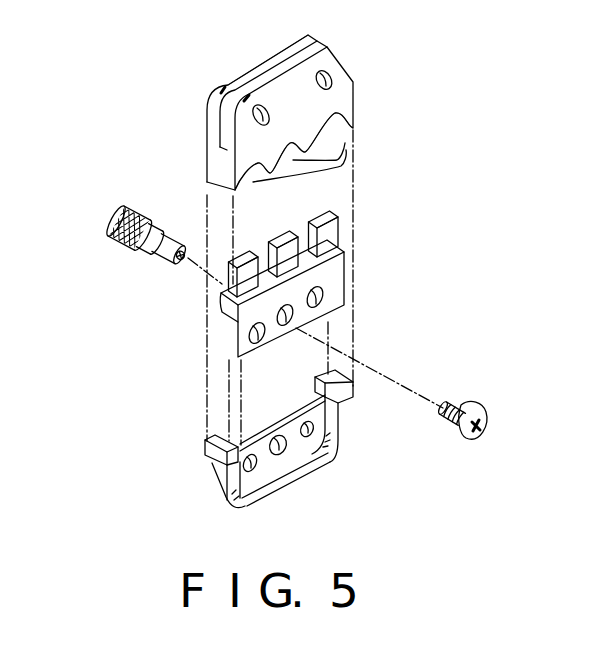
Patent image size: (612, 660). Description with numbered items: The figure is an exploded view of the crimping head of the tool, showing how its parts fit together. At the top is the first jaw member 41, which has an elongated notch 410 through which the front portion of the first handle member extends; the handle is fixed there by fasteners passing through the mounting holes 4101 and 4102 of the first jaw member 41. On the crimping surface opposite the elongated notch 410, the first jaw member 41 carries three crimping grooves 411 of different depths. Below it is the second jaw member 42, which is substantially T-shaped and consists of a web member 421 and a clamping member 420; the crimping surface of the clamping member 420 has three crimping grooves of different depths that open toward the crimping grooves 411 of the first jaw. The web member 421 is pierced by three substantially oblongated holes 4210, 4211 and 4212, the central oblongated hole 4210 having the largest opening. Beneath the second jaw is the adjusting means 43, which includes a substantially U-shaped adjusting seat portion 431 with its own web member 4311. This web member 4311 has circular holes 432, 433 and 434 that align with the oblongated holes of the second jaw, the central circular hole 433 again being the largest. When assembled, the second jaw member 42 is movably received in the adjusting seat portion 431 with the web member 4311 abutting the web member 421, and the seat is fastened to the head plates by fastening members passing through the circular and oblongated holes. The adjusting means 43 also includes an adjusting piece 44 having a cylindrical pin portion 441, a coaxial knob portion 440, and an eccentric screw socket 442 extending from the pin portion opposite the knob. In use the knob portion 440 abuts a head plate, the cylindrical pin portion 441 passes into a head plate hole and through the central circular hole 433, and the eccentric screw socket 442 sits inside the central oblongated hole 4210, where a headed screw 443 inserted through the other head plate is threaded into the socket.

The first jaw member 41 is at (260, 96).
The elongated notch 410 is at (262, 72).
The mounting hole 4101 is at (256, 108).
The mounting hole 4102 is at (338, 77).
The crimping grooves 411 is at (322, 135).
The second jaw member 42 is at (273, 313).
The clamping member 420 is at (238, 264).
The web member 421 is at (273, 334).
The central oblongated hole 4210 is at (287, 328).
The oblongated hole 4211 is at (236, 344).
The oblongated hole 4212 is at (332, 300).
The adjusting means 43 is at (283, 463).
The adjusting seat portion 431 is at (371, 416).
The web member 4311 is at (318, 420).
The circular hole 432 is at (250, 470).
The central circular hole 433 is at (280, 453).
The circular hole 434 is at (312, 447).
The adjusting piece 44 is at (131, 238).
The knob portion 440 is at (118, 215).
The cylindrical pin portion 441 is at (157, 223).
The eccentric screw socket 442 is at (163, 250).
The headed screw 443 is at (461, 407).